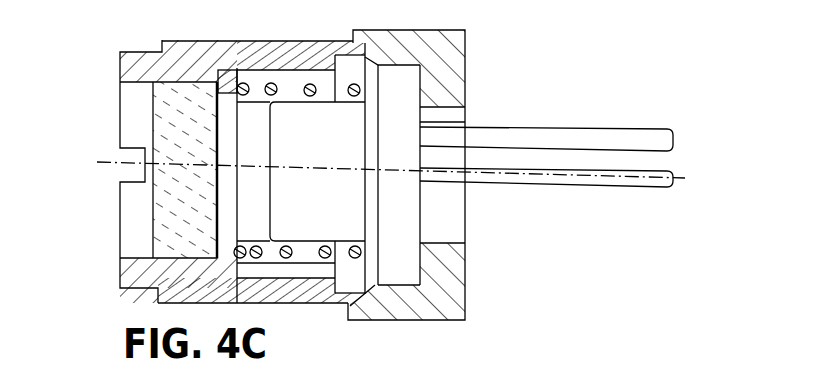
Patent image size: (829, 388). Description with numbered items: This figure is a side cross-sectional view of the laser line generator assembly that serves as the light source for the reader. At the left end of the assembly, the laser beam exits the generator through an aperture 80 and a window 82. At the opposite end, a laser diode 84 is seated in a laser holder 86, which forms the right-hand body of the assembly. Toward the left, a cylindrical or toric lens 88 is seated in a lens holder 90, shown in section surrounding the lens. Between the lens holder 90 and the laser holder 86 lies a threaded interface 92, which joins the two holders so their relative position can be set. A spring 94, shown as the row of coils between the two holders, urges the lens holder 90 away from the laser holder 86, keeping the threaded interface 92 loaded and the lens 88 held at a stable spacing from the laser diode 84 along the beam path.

The aperture 80 is at (222, 110).
The window 82 is at (133, 133).
The laser diode 84 is at (400, 216).
The laser holder 86 is at (442, 278).
The cylindrical or toric lens 88 is at (172, 208).
The lens holder 90 is at (150, 278).
The threaded interface 92 is at (161, 50).
The spring 94 is at (265, 82).